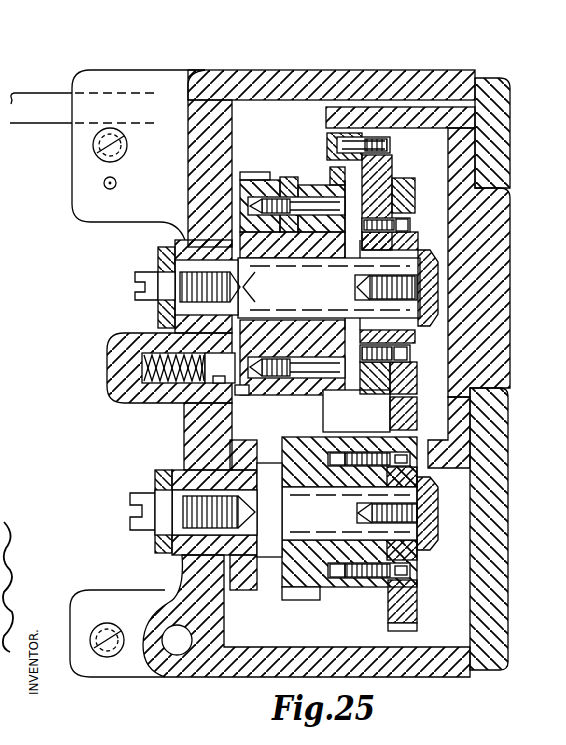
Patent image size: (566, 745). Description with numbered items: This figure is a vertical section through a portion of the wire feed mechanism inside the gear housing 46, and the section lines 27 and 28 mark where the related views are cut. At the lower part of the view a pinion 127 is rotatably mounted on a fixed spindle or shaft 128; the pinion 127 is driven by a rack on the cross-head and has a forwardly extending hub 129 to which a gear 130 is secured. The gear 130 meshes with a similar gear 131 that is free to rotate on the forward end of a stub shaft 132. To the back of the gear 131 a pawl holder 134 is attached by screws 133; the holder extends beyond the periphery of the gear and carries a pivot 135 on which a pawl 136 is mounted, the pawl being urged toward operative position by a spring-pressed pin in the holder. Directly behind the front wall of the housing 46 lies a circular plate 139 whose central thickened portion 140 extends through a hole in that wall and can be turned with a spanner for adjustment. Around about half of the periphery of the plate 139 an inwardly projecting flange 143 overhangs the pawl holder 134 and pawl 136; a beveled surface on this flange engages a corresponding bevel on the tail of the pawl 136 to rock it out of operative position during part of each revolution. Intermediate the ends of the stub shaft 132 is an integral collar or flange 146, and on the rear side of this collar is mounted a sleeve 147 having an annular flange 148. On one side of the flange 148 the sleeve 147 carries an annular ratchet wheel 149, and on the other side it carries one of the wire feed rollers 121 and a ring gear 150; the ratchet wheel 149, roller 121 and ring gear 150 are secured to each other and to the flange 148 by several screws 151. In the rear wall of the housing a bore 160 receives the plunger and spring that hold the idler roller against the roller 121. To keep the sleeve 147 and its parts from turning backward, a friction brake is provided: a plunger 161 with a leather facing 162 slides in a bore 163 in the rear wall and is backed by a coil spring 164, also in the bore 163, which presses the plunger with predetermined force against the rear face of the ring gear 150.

The section line 27— 27 is at (95, 287).
The section line 28— 28 is at (130, 512).
The gear housing 46 is at (505, 626).
The wire feed roller 121 is at (290, 176).
The pinion 127 is at (300, 592).
The fixed spindle or shaft 128 is at (305, 510).
The hub 129 is at (345, 587).
The gear 130 is at (416, 608).
The gear 131 is at (412, 390).
The stub shaft 132 is at (430, 328).
The screws 133 is at (408, 224).
The pawl holder 134 is at (392, 175).
The pivot 135 is at (390, 144).
The pawl 136 is at (336, 140).
The circular plate 139 is at (466, 430).
The central thickened portion 140 is at (506, 350).
The inwardly projecting flange 143 is at (393, 118).
The collar or flange 146 is at (346, 292).
The sleeve 147 is at (268, 250).
The annular flange 148 is at (306, 250).
The annular ratchet wheel 149 is at (330, 181).
The ring gear 150 is at (246, 172).
The screws 151 is at (264, 196).
The bore 160 is at (176, 655).
The plunger 161 is at (226, 403).
The leather facing 162 is at (244, 396).
The bore 163 is at (148, 403).
The coil spring 164 is at (132, 403).